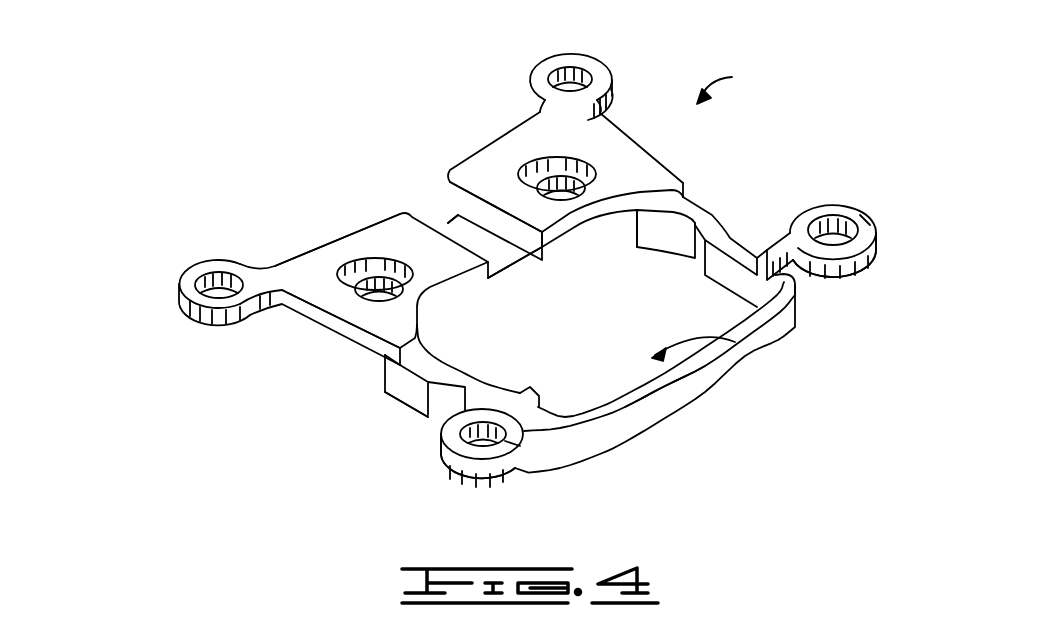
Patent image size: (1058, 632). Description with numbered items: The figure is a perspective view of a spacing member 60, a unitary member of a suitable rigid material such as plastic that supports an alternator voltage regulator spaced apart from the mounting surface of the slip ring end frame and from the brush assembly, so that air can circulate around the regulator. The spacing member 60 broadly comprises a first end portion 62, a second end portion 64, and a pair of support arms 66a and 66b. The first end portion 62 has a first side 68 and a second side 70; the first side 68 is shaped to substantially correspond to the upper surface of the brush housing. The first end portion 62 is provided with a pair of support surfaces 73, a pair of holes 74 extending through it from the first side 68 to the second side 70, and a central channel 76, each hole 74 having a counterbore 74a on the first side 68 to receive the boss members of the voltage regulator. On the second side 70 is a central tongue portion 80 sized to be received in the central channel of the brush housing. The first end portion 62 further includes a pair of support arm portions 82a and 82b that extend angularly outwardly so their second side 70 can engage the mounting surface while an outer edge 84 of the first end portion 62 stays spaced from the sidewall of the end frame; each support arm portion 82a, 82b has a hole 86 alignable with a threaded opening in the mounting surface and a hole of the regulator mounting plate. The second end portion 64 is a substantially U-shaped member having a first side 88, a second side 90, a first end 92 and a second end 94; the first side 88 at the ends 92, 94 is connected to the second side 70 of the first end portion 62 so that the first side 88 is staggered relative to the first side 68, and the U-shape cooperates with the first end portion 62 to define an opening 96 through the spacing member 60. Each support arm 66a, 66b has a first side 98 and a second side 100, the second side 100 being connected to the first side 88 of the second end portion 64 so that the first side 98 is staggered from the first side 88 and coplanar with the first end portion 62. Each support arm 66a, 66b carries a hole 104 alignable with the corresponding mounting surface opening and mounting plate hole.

The spacing member 60 is at (730, 85).
The first end portion 62 is at (477, 150).
The second end portion 64 is at (708, 390).
The support arm 66a is at (443, 453).
The support arm 66b is at (840, 207).
The first side 68 is at (387, 222).
The second side 70 is at (320, 322).
The support surfaces 73 is at (300, 272).
The holes 74 is at (368, 288).
The counterbore 74a is at (382, 268).
The central channel 76 is at (452, 232).
The central tongue portion 80 is at (510, 287).
The support arm portion 82a is at (188, 312).
The support arm portion 82b is at (553, 57).
The outer edge 84 is at (452, 176).
The hole 86 is at (210, 283).
The first side 88 is at (743, 337).
The second side 90 is at (638, 442).
The first end 92 is at (385, 372).
The second end 94 is at (637, 235).
The opening 96 is at (765, 350).
The first side 98 is at (493, 447).
The second side 100 is at (472, 479).
The hole 104 is at (477, 437).